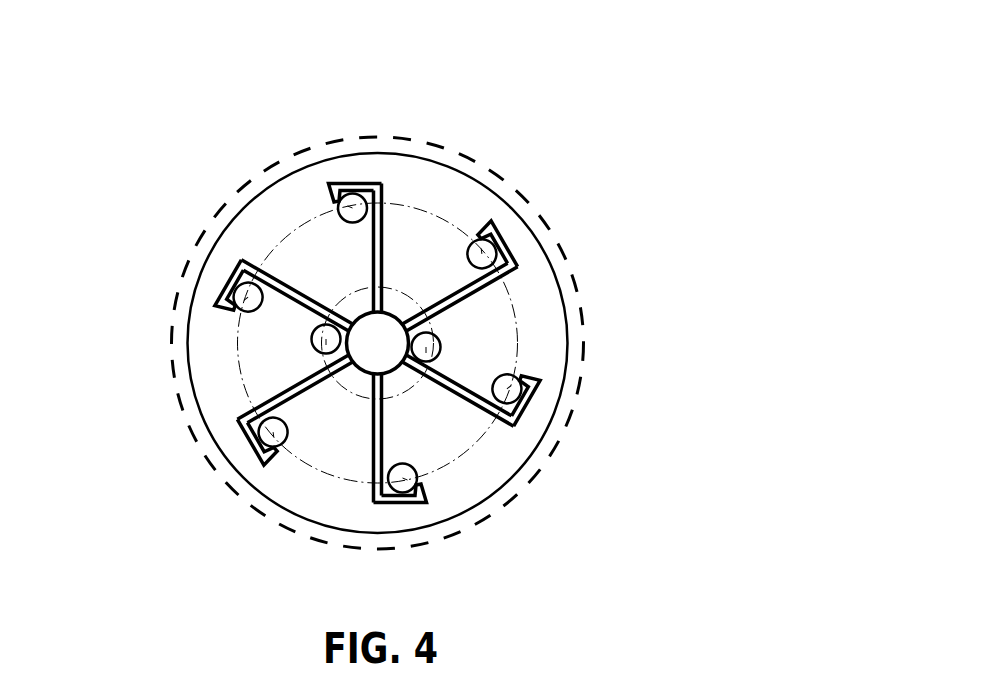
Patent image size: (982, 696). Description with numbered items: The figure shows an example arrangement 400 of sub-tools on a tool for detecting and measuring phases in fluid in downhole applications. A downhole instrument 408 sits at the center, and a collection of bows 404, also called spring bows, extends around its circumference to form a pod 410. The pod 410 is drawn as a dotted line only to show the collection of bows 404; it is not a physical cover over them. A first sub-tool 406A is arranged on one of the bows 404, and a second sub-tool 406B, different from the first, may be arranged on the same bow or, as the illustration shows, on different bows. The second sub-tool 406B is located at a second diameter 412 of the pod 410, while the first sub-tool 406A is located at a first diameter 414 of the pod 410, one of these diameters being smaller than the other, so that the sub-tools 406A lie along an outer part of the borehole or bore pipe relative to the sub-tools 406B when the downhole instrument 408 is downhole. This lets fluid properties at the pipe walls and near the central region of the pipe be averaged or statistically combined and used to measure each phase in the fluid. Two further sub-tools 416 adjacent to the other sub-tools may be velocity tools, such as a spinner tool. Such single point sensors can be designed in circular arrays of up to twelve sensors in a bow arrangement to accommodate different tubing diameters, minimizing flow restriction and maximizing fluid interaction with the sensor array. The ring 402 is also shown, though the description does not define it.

The arrangement 400 is at (797, 129).
The inner ring 402 is at (541, 238).
The bows 404 is at (490, 227).
The first sub-tool 406A is at (338, 204).
The second sub-tool 406B is at (496, 400).
The downhole instrument 408 is at (414, 328).
The pod 410 is at (573, 262).
The second diameter 412 is at (311, 348).
The first diameter 414 is at (237, 382).
The sub-tool 416 is at (514, 430).